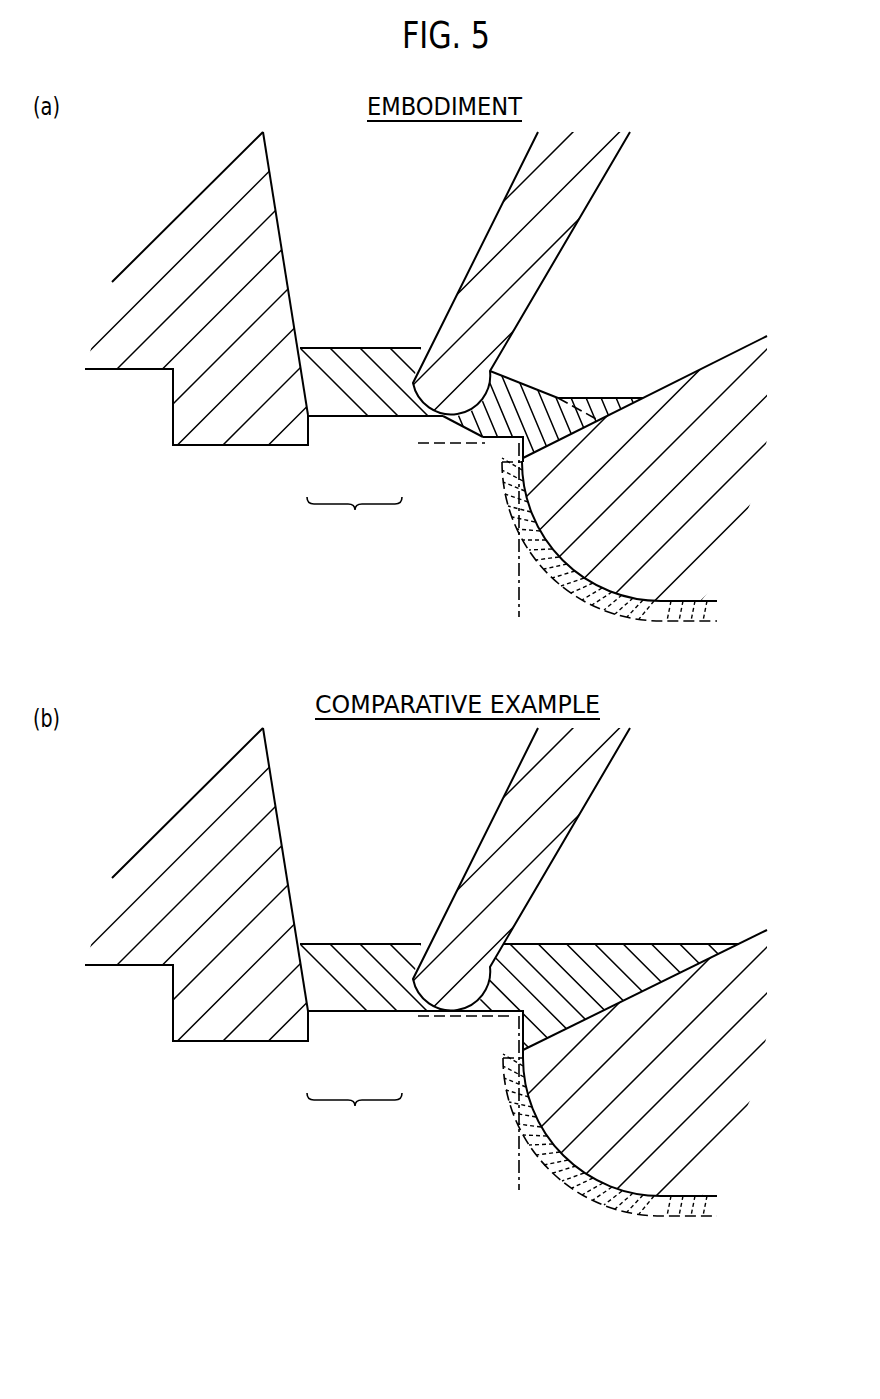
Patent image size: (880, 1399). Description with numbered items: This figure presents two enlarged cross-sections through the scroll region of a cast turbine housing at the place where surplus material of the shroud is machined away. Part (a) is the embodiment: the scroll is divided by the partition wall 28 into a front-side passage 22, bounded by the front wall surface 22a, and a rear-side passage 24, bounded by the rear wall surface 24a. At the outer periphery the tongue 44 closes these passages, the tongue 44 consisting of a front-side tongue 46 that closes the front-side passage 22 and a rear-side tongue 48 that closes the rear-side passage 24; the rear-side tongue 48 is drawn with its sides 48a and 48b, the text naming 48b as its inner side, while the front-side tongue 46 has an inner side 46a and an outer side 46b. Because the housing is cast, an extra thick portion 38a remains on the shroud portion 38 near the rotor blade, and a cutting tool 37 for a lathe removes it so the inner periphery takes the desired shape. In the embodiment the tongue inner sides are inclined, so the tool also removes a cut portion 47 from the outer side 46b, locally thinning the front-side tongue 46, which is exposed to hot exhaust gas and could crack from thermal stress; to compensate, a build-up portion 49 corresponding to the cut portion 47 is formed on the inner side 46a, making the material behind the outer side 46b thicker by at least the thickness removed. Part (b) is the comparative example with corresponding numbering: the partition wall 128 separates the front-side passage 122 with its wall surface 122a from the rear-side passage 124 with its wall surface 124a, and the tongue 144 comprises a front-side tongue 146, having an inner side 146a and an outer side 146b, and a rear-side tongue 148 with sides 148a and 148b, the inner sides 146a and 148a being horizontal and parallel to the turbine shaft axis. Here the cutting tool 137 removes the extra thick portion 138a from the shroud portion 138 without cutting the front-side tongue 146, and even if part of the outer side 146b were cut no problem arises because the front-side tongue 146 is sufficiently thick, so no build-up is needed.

The front-side passage 22 is at (697, 249).
The front wall surface 22a is at (727, 352).
The rear-side passage 24 is at (387, 204).
The rear wall surface 24a is at (277, 198).
The partition wall 28 is at (537, 272).
The cutting tool for a lathe 37 is at (518, 590).
The shroud portion 38 is at (667, 567).
The extra thick portion 38a is at (565, 585).
The tongue 44 is at (354, 520).
The front-side tongue 46 is at (457, 417).
The inner side of front-side tongue 46a is at (522, 381).
The outer side of front-side tongue 46b is at (472, 429).
The cut portion 47 is at (521, 458).
The rear-side tongue 48 is at (345, 418).
The upper surface of spacer member 48a is at (369, 347).
The inner side of rear-side tongue 48b is at (378, 417).
The build-up portion 49 is at (593, 402).
The front-side passage 122 is at (710, 847).
The inclined surface of second member (comparative example) 122a is at (750, 935).
The rear-side passage 124 is at (400, 801).
The inclined surface of first member (comparative example) 124a is at (277, 797).
The partition wall 128 is at (537, 870).
The cutting tool for a lathe 137 is at (518, 1173).
The groove (comparative example) 138 is at (678, 1157).
The extra thick portion 138a is at (557, 1173).
The seal assembly (comparative example) 144 is at (354, 1117).
The front-side tongue 146 is at (487, 1012).
The inner side of front-side tongue 146a is at (650, 942).
The outer side of front-side tongue 146b is at (505, 1013).
The rear-side tongue 148 is at (338, 1013).
The inner side of rear-side tongue 148a is at (371, 943).
The lower surface of spacer member (comparative example) 148b is at (375, 1011).